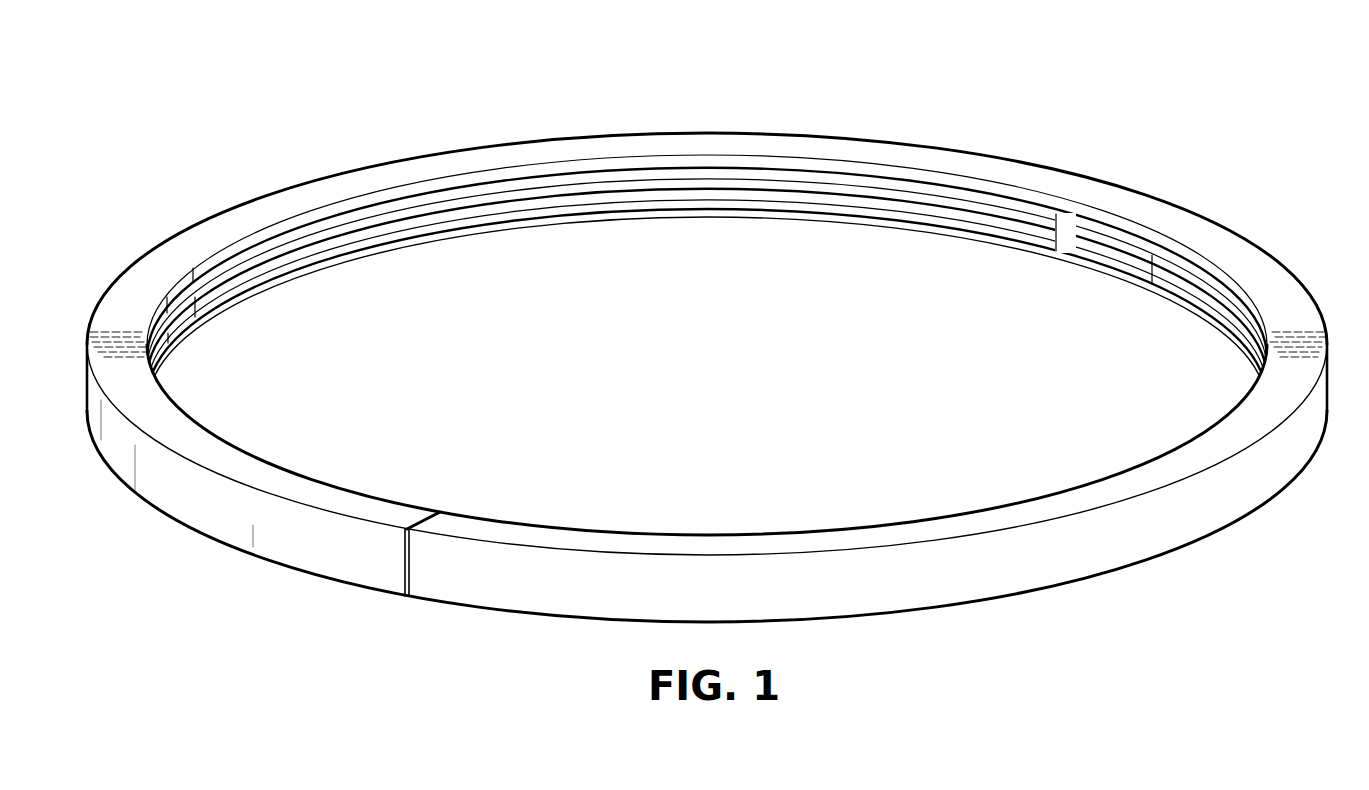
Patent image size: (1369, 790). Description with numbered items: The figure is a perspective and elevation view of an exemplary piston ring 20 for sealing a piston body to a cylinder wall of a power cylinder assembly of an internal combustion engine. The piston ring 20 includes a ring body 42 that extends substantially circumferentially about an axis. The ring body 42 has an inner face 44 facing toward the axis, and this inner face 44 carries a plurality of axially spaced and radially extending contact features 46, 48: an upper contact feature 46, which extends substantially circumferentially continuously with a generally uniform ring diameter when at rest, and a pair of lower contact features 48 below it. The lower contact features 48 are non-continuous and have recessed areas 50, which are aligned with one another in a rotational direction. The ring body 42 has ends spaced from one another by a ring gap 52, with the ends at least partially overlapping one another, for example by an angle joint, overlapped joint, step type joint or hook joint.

The piston ring 20 is at (980, 137).
The ring body 42 is at (975, 525).
The inner face 44 is at (652, 218).
The upper contact feature 46 is at (628, 163).
The lower contact features 48 is at (480, 201).
The recessed areas 50 is at (1120, 242).
The ring gap 52 is at (405, 570).